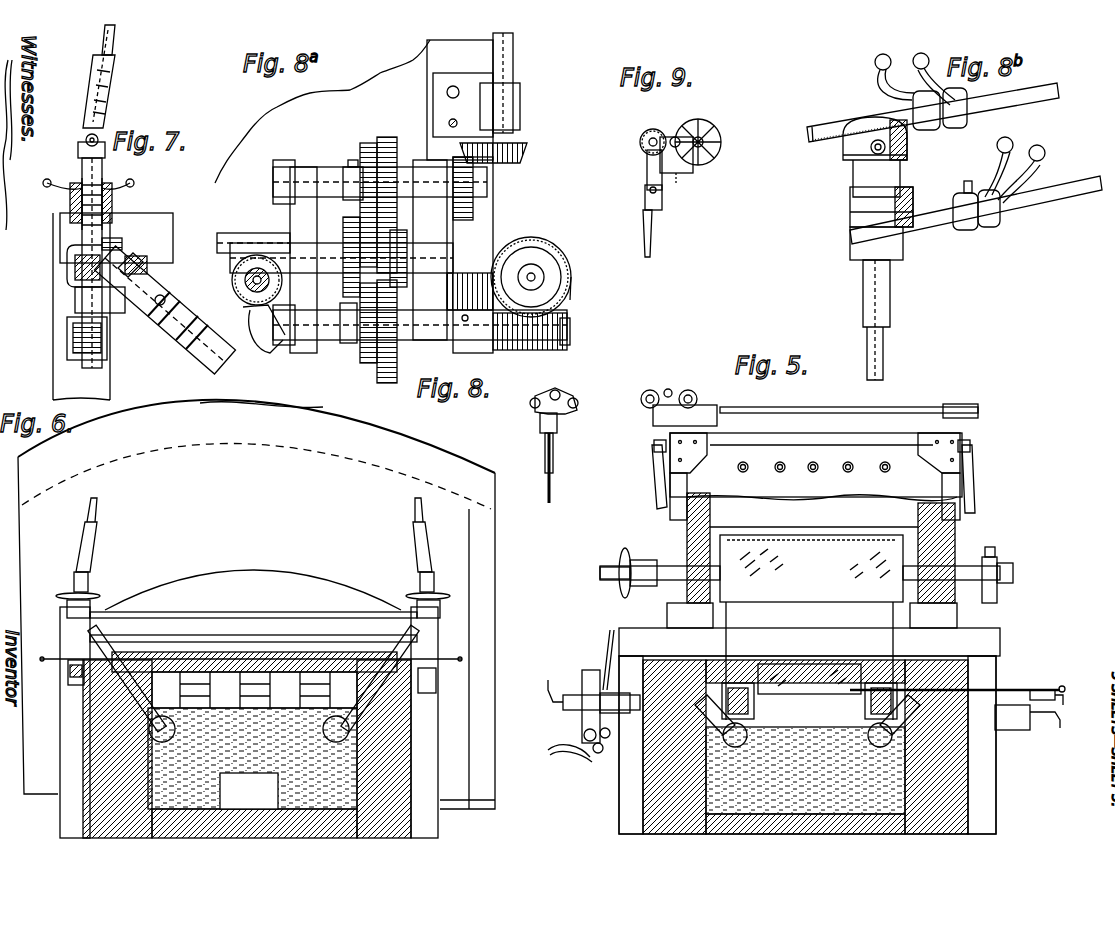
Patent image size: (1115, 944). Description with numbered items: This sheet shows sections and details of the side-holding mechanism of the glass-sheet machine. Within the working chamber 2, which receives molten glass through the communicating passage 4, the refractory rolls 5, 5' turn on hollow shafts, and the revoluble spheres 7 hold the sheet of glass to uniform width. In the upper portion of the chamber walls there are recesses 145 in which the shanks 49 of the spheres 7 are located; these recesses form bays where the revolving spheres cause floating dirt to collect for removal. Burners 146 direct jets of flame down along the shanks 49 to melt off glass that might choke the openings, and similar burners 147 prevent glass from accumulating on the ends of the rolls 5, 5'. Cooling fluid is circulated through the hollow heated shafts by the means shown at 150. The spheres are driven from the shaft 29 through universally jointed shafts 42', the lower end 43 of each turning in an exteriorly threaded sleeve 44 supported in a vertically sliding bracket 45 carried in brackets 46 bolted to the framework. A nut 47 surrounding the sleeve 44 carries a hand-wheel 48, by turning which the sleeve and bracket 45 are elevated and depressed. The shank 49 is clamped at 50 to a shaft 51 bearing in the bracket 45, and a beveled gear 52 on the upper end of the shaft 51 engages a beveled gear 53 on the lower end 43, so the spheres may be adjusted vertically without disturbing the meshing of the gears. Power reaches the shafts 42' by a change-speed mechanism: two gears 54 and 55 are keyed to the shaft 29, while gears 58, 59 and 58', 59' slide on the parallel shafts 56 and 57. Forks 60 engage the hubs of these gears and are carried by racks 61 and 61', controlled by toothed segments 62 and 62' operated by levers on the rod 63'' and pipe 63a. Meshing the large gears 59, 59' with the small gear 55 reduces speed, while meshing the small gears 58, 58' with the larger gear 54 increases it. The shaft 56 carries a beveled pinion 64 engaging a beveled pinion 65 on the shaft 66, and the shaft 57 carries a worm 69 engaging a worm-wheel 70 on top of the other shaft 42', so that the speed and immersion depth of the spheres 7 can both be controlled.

In FIG. 5, the working chamber 2 is at (805, 820).
In FIG. 6, the working chamber 2 is at (325, 812).
In FIG. 6, the communicating passage 4 is at (250, 812).
In FIG. 5, the roll 5 is at (749, 701).
In FIG. 5, the roll 5' is at (866, 703).
In FIG. 5, the revoluble sphere 7 is at (737, 747).
In FIG. 6, the revoluble sphere 7 is at (254, 690).
In FIG. 8A, the shaft 29 is at (235, 233).
In FIG. 7, the universally jointed shaft 42' is at (117, 76).
In FIG. 8A, the universally jointed shaft 42' is at (546, 274).
In FIG. 5, the universally jointed shaft 42' is at (815, 476).
In FIG. 6, the universally jointed shaft 42' is at (254, 545).
In FIG. 7, the lower end of shaft 43 is at (82, 270).
In FIG. 7, the sleeve 44 is at (80, 243).
In FIG. 7, the vertically sliding bracket 45 is at (80, 262).
In FIG. 7, the bracket 46 is at (70, 200).
In FIG. 7, the nut 47 is at (112, 196).
In FIG. 7, the hand-wheel 48 is at (132, 183).
In FIG. 7, the shank 49 is at (214, 352).
In FIG. 6, the shank 49 is at (135, 665).
In FIG. 8A, the clamp 50 is at (246, 282).
In FIG. 7, the shaft 51 is at (110, 242).
In FIG. 7, the beveled gear 52 is at (110, 245).
In FIG. 7, the beveled gear 53 is at (111, 283).
In FIG. 8A, the gear 54 is at (348, 217).
In FIG. 8A, the gear 55 is at (405, 238).
In FIG. 8A, the shaft 56 is at (400, 172).
In FIG. 8A, the shaft 57 is at (403, 340).
In FIG. 8A, the small gear 58 is at (367, 184).
In FIG. 8A, the small gear 58' is at (360, 341).
In FIG. 8A, the large gear 59 is at (393, 182).
In FIG. 8A, the large gear 59' is at (391, 346).
In FIG. 8A, the fork 60 is at (350, 167).
In FIG. 8B, the fork 60 is at (877, 70).
In FIG. 8B, the rack 61 is at (932, 112).
In FIG. 8B, the rack 61' is at (976, 217).
In FIG. 8A, the toothed segment 62 is at (237, 280).
In FIG. 8B, the toothed segment 62 is at (856, 157).
In FIG. 8A, the toothed segment 62' is at (245, 324).
In FIG. 8B, the toothed segment 62' is at (859, 223).
In FIG. 8B, the pipe 63a is at (890, 322).
In FIG. 8B, the rod 63'' is at (912, 259).
In FIG. 8A, the beveled pinion 64 is at (470, 255).
In FIG. 8A, the beveled pinion 65 is at (527, 152).
In FIG. 8A, the shaft 66 is at (513, 75).
In FIG. 5, the shaft 66 is at (800, 410).
In FIG. 8A, the worm 69 is at (535, 350).
In FIG. 8A, the worm-wheel 70 is at (571, 285).
In FIG. 5, the recess 145 is at (643, 752).
In FIG. 6, the recess 145 is at (75, 790).
In FIG. 6, the burner 146 is at (110, 635).
In FIG. 5, the burner 147 is at (640, 690).
In FIG. 5, the cooling fluid circulating means 150 is at (600, 573).